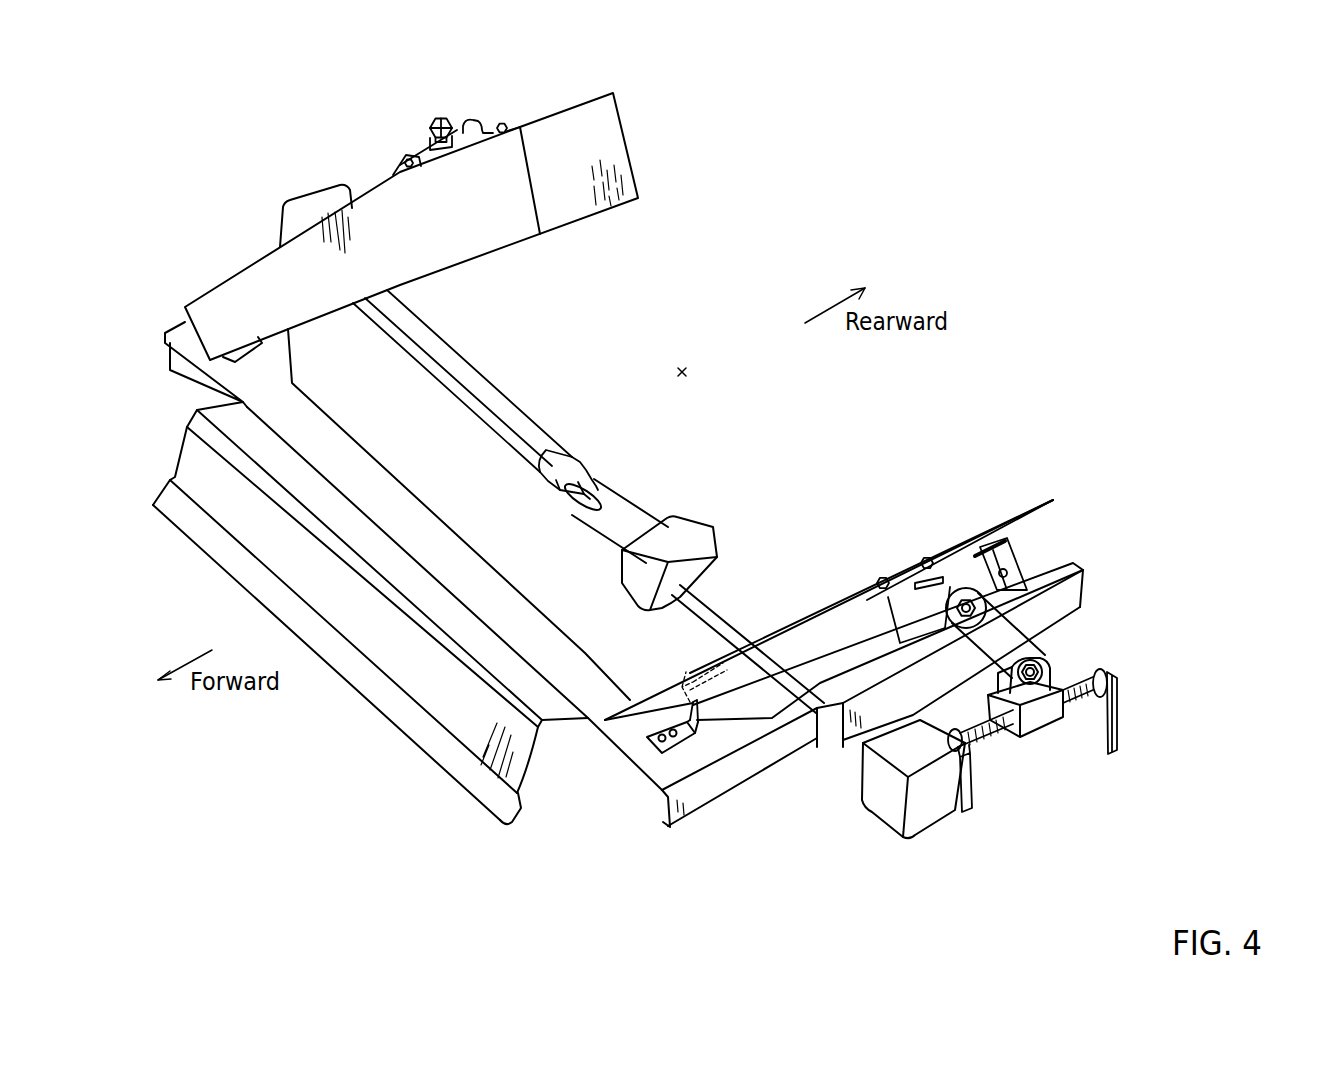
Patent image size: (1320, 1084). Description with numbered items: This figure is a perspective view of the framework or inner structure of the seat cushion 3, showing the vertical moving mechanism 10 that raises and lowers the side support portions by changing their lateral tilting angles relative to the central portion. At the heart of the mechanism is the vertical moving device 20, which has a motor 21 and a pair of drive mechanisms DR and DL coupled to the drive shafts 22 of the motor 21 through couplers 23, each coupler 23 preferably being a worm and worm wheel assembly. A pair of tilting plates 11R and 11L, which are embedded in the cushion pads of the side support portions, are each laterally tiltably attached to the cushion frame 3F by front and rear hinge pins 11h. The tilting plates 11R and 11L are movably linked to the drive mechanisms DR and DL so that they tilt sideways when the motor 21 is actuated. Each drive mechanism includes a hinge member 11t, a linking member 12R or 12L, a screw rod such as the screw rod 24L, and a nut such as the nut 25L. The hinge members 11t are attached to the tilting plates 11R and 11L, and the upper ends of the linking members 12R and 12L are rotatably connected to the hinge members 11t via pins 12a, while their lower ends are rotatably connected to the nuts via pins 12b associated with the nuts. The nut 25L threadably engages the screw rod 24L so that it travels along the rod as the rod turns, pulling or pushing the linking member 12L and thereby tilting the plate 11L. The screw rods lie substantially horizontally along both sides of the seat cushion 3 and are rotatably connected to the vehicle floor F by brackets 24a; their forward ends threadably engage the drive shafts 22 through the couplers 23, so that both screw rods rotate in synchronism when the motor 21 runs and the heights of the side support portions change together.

The seat cushion 3 is at (233, 142).
The cushion frame 3F is at (417, 527).
The vertical moving mechanism 10 is at (864, 387).
The vertical moving device 20 is at (624, 574).
The tilting plate 11R is at (502, 223).
The tilting plate 11L is at (783, 640).
The hinge member 11t is at (468, 133).
The hinge pin 11h is at (690, 723).
The linking member 12R is at (457, 123).
The linking member 12L is at (1002, 635).
The pin 12a is at (427, 135).
The pin 12b is at (1053, 663).
The motor 21 is at (623, 523).
The drive shaft 22 is at (517, 428).
The coupler 23 is at (323, 203).
The screw rod 24L is at (995, 737).
The bracket 24a is at (962, 800).
The nut 25L is at (1043, 708).
The drive mechanism DR is at (311, 102).
The drive mechanism DL is at (1034, 828).
The vehicle floor F is at (682, 372).